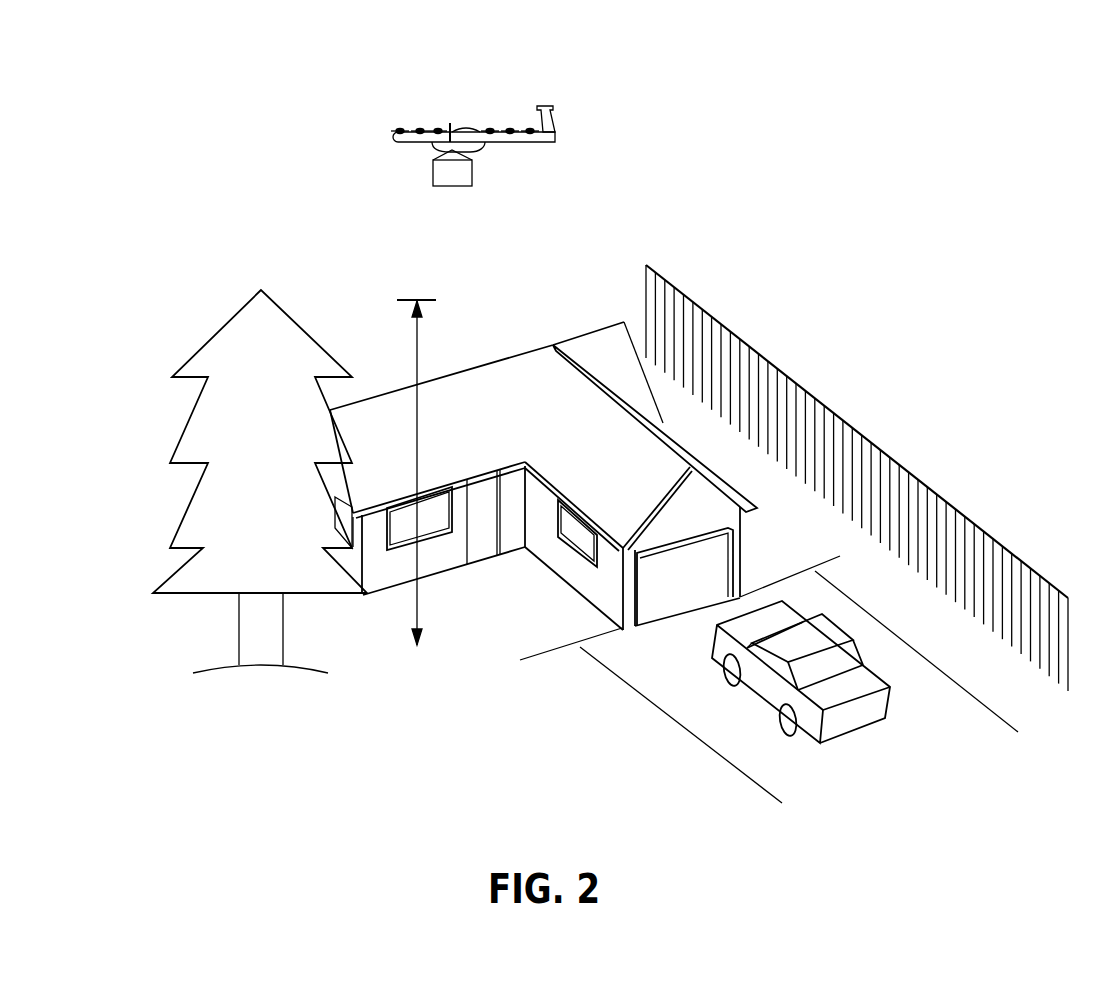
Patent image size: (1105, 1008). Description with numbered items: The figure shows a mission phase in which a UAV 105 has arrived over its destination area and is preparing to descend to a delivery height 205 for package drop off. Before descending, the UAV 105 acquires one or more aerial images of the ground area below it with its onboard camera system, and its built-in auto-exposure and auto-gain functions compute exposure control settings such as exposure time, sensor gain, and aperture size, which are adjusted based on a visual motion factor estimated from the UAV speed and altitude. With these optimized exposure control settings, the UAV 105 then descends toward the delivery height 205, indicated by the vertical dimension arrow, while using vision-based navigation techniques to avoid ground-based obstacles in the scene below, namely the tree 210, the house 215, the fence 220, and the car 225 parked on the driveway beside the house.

The UAV 105 is at (416, 95).
The delivery height 205 is at (418, 347).
The tree 210 is at (277, 524).
The house 215 is at (499, 426).
The fence 220 is at (832, 457).
The car 225 is at (853, 725).